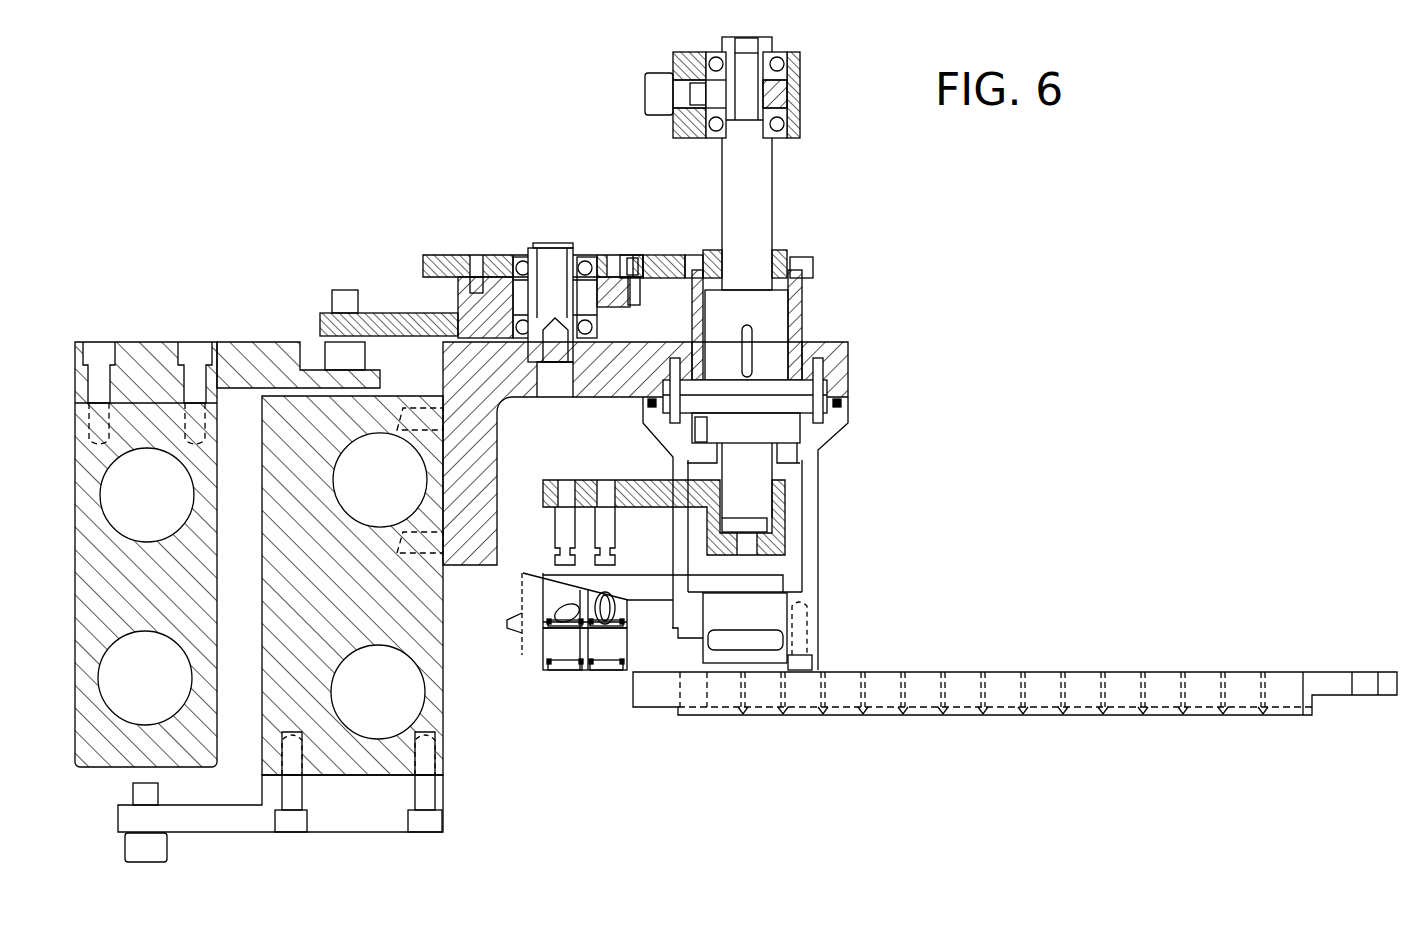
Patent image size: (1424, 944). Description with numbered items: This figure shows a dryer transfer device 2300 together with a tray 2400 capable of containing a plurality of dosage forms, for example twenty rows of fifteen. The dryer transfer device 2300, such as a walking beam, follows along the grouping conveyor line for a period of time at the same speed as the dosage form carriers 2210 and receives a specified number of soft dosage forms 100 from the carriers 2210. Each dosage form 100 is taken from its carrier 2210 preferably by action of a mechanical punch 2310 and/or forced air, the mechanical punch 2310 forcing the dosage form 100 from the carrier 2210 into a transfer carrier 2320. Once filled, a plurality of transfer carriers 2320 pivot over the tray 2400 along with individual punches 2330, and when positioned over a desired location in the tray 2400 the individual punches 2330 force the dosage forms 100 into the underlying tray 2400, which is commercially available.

The soft dosage form 100 is at (613, 617).
The carrier 2210 is at (532, 593).
The dryer transfer device 2300 is at (863, 353).
The mechanical punch 2310 is at (750, 495).
The transfer carrier 2320 is at (548, 655).
The individual punch 2330 is at (598, 527).
The tray 2400 is at (1267, 663).